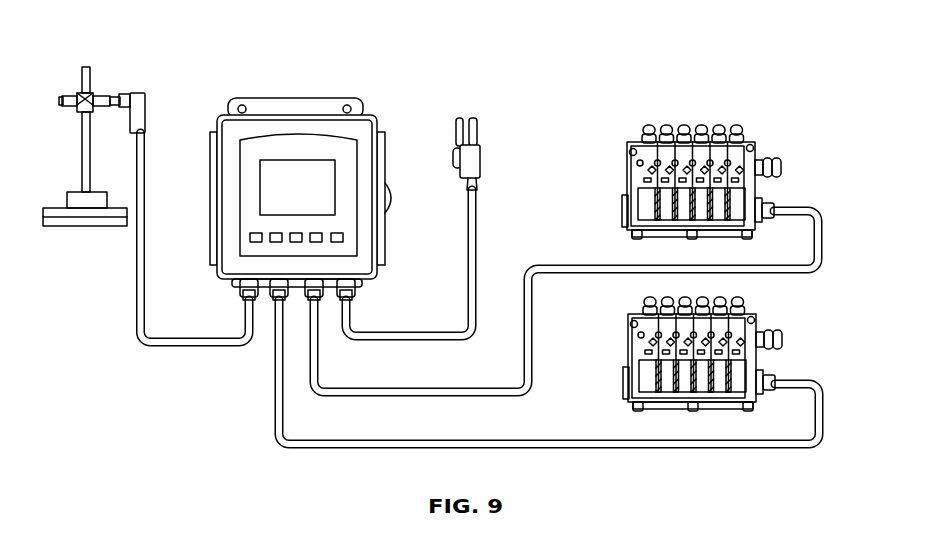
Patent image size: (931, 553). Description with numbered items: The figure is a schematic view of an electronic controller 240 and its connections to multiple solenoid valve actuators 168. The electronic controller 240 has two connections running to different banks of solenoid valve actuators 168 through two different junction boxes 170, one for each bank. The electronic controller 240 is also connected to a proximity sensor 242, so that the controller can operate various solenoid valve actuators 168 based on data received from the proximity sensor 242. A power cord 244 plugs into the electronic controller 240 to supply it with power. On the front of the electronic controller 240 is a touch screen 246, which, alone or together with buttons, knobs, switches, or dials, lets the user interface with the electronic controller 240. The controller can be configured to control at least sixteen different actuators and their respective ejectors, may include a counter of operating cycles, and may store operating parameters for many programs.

The solenoid valve actuator 168 is at (740, 149).
The junction box 170 is at (627, 165).
The electronic controller 240 is at (376, 117).
The proximity sensor 242 is at (100, 96).
The power cord 244 is at (485, 162).
The touch screen 246 is at (310, 170).